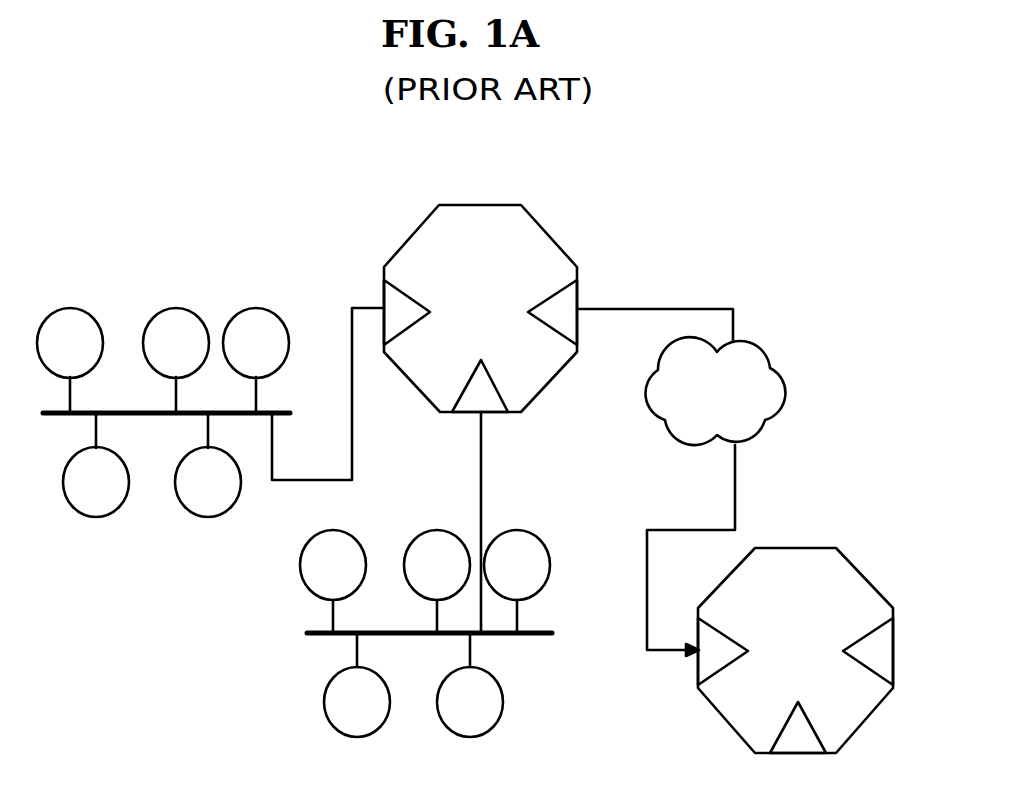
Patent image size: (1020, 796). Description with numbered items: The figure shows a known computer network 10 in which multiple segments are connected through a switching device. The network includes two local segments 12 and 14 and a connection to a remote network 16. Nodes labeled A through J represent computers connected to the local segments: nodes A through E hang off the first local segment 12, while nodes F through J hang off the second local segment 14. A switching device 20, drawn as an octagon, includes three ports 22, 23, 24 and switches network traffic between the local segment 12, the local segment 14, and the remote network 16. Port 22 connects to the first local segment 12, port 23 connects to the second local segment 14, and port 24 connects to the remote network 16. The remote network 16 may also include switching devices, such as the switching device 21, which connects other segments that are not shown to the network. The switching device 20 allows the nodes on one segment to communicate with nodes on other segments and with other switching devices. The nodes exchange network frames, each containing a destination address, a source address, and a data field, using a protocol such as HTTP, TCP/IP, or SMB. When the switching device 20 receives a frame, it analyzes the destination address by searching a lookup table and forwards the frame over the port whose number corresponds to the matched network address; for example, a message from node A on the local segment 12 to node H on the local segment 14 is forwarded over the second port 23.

The computer network 10 is at (577, 183).
The local segment 12 is at (108, 402).
The local segment 14 is at (538, 636).
The remote network 16 is at (765, 358).
The switching device 20 is at (415, 232).
The switching device 21 is at (768, 548).
The port 22 is at (384, 294).
The port 23 is at (488, 415).
The port 24 is at (580, 289).